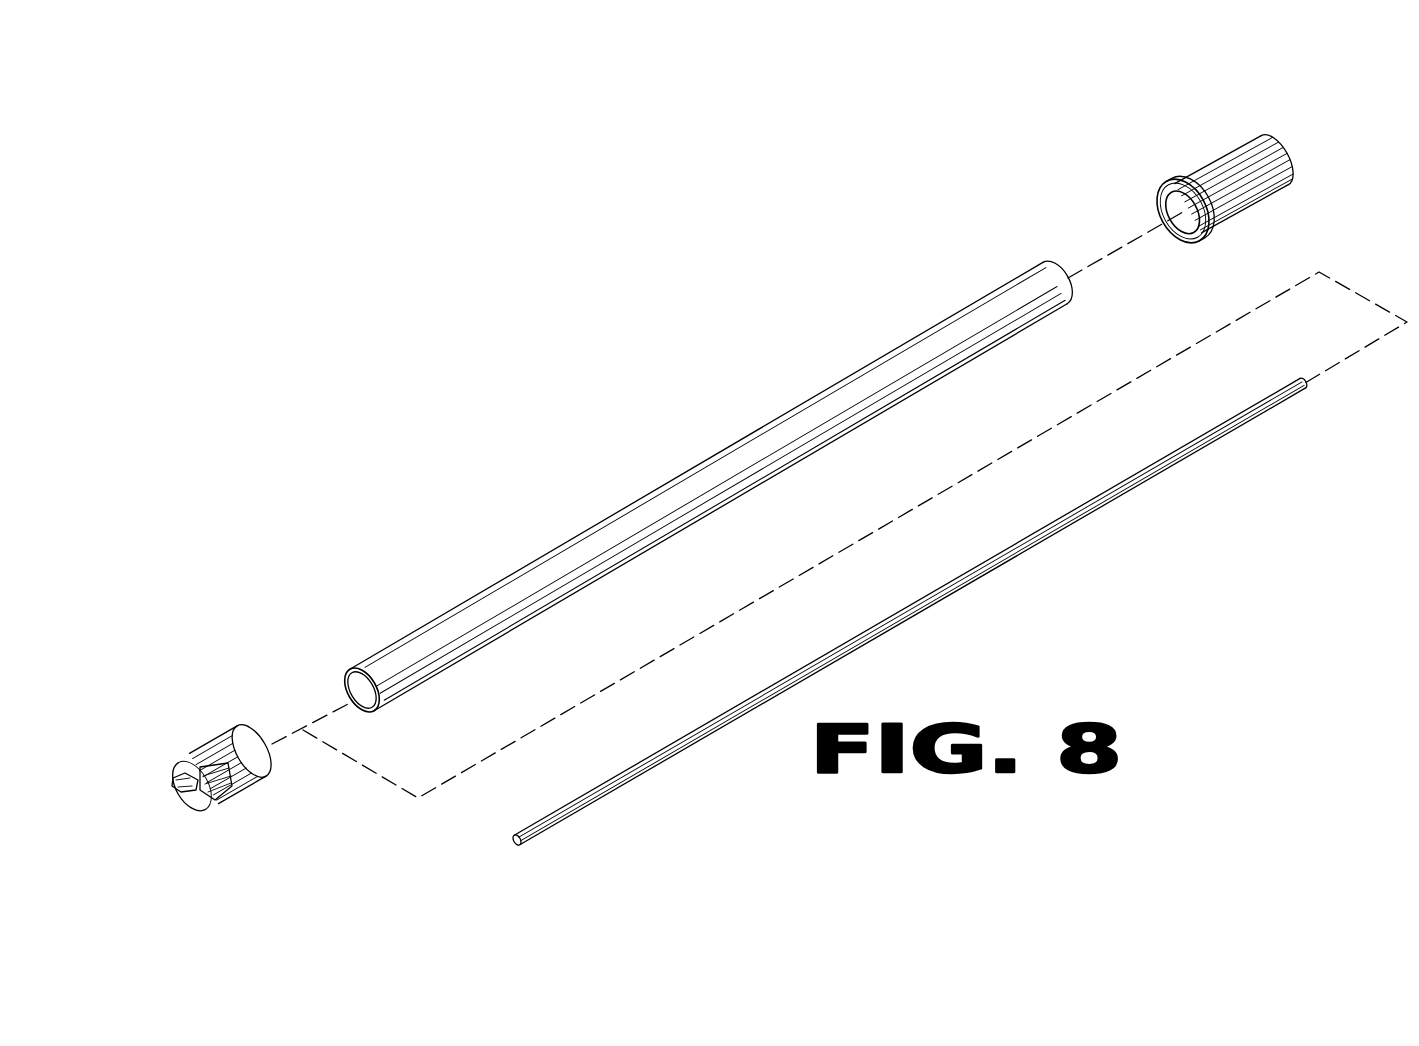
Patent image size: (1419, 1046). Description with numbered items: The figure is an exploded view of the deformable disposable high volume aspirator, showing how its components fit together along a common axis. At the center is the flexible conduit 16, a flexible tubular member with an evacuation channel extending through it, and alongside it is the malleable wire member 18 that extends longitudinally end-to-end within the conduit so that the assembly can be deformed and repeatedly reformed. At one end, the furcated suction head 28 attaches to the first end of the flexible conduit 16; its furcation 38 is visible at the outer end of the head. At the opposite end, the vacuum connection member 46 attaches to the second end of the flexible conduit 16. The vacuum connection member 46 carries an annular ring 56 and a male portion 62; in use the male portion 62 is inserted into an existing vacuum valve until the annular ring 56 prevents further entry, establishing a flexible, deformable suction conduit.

The flexible conduit 16 is at (822, 400).
The wire member 18 is at (1102, 508).
The furcated suction head 28 is at (268, 760).
The furcation 38 is at (178, 785).
The vacuum connection member 46 is at (1192, 163).
The annular ring 56 is at (1160, 186).
The male portion of vacuum connection member 62 is at (1246, 136).